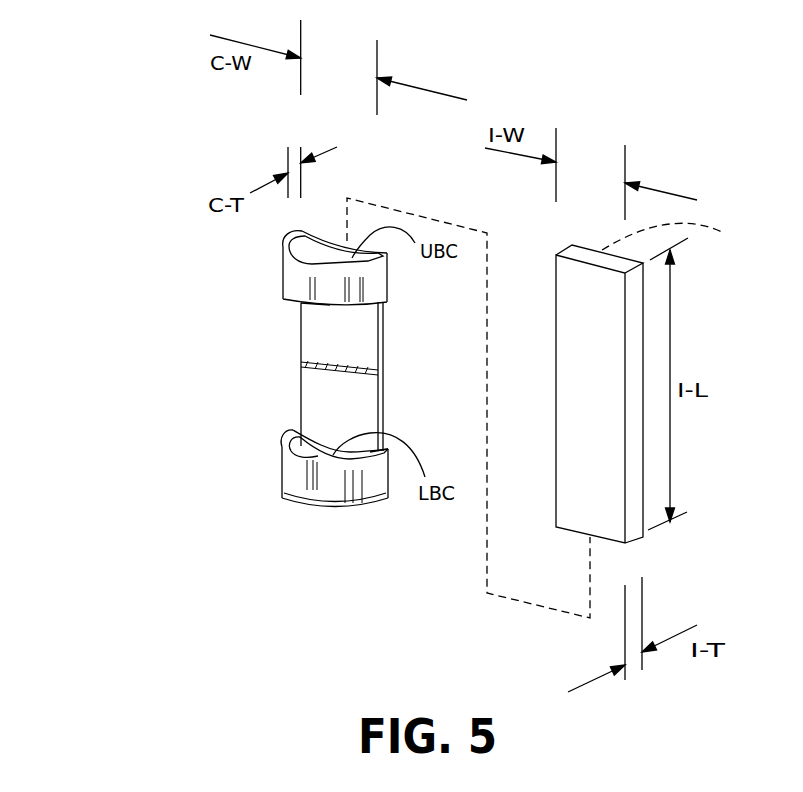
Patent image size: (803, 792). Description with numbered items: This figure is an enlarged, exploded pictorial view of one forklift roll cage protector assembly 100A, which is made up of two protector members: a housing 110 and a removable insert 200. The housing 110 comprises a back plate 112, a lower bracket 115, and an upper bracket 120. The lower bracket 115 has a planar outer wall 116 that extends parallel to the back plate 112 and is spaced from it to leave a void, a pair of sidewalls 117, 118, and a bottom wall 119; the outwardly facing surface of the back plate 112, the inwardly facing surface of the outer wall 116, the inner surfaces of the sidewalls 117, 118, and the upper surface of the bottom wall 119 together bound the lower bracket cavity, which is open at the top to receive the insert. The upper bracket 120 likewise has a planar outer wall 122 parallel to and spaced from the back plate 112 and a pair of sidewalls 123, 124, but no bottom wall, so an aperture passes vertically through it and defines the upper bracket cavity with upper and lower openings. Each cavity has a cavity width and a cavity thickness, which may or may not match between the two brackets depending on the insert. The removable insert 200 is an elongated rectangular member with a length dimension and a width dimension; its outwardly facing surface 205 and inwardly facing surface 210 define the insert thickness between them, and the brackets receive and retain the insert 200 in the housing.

The roll cage protector assembly 100A is at (182, 170).
The housing 110 is at (321, 376).
The back plate 112 is at (380, 402).
The lower bracket 115 is at (297, 525).
The outer wall 116 is at (320, 490).
The sidewall 117 is at (378, 480).
The sidewall 118 is at (298, 471).
The bottom wall 119 is at (322, 515).
The upper bracket 120 is at (302, 307).
The outer wall 122 is at (328, 297).
The sidewall 123 is at (375, 280).
The sidewall 124 is at (298, 271).
The removable insert 200 is at (572, 379).
The outwardly facing surface 205 is at (583, 292).
The inwardly facing surface 210 is at (682, 237).